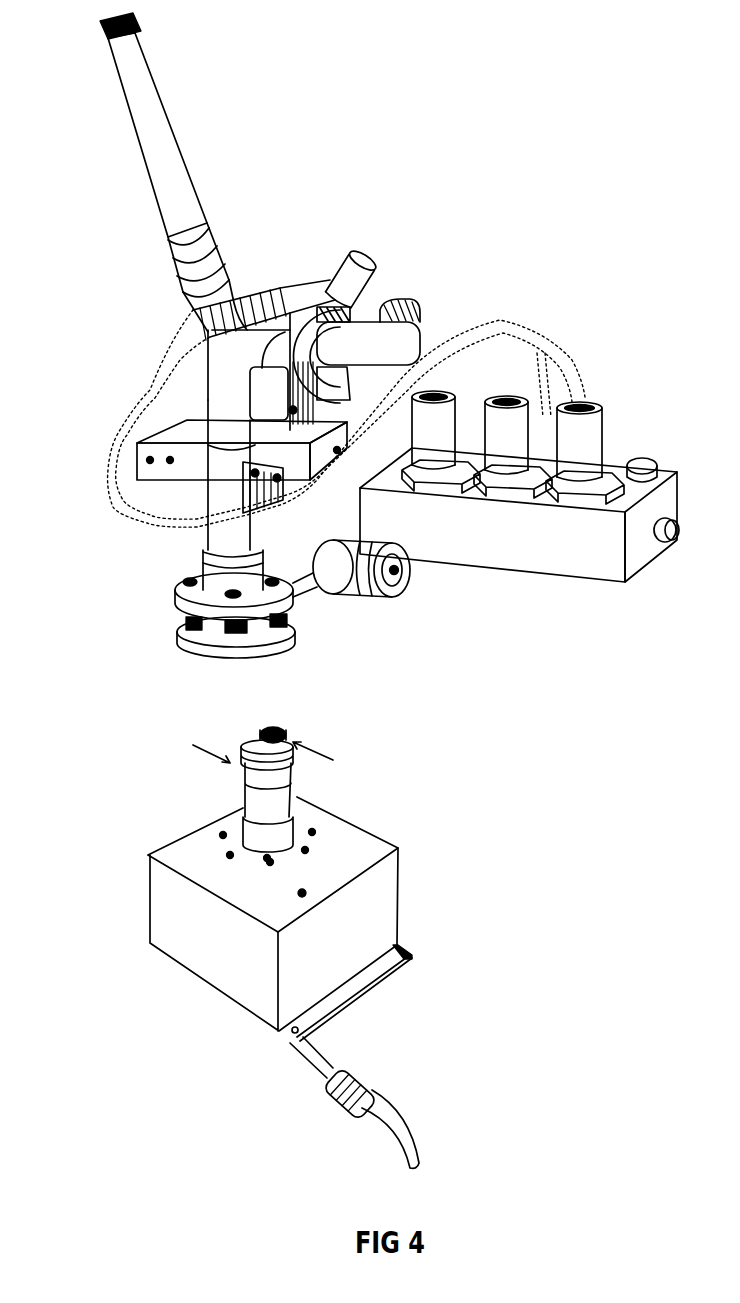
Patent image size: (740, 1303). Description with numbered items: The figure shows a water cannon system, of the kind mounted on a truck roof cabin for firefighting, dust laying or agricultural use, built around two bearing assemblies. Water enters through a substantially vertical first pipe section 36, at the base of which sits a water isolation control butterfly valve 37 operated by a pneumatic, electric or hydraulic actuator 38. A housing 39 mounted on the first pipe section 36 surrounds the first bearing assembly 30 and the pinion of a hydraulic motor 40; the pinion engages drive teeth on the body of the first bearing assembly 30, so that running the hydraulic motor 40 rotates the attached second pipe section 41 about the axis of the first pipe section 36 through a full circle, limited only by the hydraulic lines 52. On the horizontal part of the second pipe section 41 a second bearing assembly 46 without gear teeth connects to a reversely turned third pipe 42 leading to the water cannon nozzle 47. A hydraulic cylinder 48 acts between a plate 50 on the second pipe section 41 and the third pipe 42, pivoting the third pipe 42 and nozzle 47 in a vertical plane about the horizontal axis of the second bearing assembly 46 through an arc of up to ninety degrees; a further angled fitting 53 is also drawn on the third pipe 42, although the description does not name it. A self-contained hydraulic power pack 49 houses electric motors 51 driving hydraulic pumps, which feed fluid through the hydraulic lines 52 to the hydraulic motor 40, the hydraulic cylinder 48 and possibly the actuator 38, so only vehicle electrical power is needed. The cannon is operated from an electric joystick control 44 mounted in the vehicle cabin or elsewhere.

The first bearing assembly 30 is at (125, 420).
The first pipe section 36 is at (203, 558).
The water isolation control butterfly valve 37 is at (177, 600).
The actuator 38 is at (411, 583).
The housing 39 is at (135, 450).
The hydraulic motor 40 is at (300, 487).
The second pipe section 41 is at (210, 395).
The third pipe 42 is at (420, 338).
The electric joystick control 44 is at (168, 916).
The second bearing assembly 46 is at (292, 315).
The water cannon nozzle 47 is at (140, 80).
The hydraulic cylinder 48 is at (405, 310).
The hydraulic power pack 49 is at (555, 550).
The plate 50 is at (223, 367).
The electric motors 51 is at (560, 405).
The hydraulic lines 52 is at (70, 507).
The inlet tube 53 is at (350, 295).